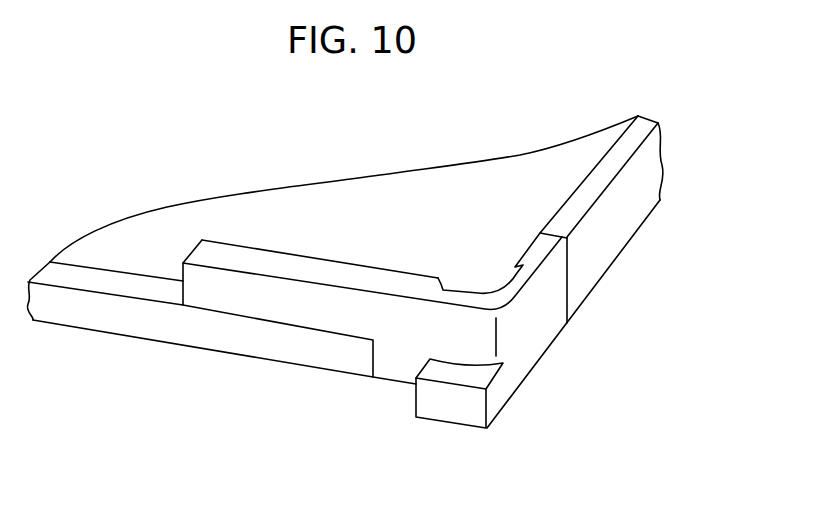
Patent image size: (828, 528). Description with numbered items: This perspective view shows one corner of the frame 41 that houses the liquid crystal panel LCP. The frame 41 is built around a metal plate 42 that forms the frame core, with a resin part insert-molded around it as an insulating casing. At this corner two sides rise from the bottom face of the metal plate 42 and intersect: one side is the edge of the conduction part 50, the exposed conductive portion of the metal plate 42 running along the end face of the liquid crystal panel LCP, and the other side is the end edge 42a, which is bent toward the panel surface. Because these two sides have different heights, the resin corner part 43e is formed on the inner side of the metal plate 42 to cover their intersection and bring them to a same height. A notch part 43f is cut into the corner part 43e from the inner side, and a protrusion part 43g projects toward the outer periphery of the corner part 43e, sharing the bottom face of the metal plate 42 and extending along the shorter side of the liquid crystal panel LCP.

The frame 41 is at (612, 318).
The metal plate 42 is at (200, 335).
The end edge 42a is at (117, 287).
The corner part 43e is at (407, 325).
The notch part 43f is at (473, 290).
The protrusion part 43g is at (447, 408).
The conduction part 50 is at (648, 123).
The liquid crystal panel LCP is at (370, 188).